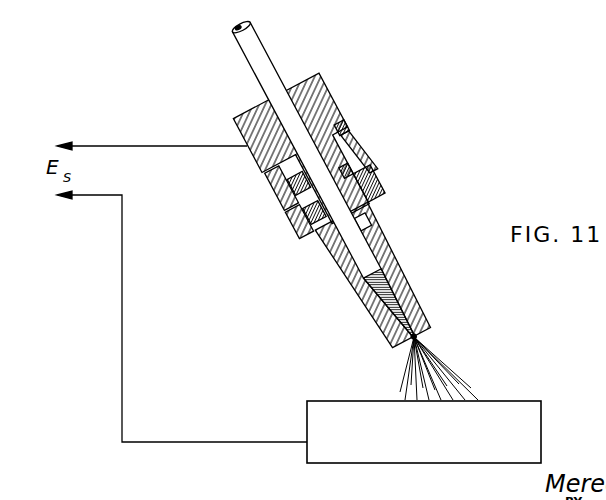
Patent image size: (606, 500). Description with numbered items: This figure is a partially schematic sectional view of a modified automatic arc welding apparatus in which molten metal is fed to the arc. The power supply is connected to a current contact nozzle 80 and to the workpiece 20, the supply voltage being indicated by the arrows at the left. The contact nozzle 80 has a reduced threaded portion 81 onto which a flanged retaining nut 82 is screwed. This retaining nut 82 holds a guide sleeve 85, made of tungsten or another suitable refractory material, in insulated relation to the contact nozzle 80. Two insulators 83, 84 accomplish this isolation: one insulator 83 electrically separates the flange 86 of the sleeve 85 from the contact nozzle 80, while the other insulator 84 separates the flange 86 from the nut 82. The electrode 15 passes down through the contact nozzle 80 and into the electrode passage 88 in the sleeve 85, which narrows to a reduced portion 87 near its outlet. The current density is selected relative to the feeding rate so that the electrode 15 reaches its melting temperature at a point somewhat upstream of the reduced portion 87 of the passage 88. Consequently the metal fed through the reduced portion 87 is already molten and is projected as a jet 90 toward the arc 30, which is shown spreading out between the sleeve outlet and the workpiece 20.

The electrode 15 is at (259, 60).
The current contact nozzle 80 is at (313, 87).
The reduced threaded portion 81 is at (340, 127).
The flanged retaining nut 82 is at (352, 137).
The insulator 83 is at (284, 205).
The insulator 84 is at (292, 222).
The guide sleeve 85 is at (382, 241).
The flange 86 is at (377, 178).
The reduced portion 87 is at (403, 318).
The electrode passage 88 is at (358, 221).
The jet 90 is at (418, 337).
The arc 30 is at (449, 377).
The workpiece 20 is at (425, 450).